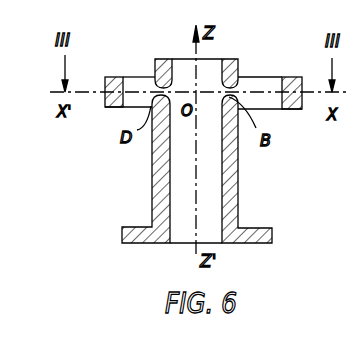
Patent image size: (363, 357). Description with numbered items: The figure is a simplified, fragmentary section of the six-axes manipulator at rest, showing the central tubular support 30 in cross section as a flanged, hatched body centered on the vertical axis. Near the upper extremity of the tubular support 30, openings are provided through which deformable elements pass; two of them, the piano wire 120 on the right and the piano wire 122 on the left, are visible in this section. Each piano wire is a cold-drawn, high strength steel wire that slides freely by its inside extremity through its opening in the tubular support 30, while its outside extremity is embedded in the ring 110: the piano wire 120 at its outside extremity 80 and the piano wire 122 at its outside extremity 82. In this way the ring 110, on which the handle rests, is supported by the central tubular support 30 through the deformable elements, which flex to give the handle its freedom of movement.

The central tubular support 30 is at (232, 192).
The deformable element 122 is at (140, 77).
The ring 110 is at (112, 77).
The deformable element 120 is at (258, 77).
The outside extremity 82 is at (108, 108).
The outside extremity 80 is at (294, 110).